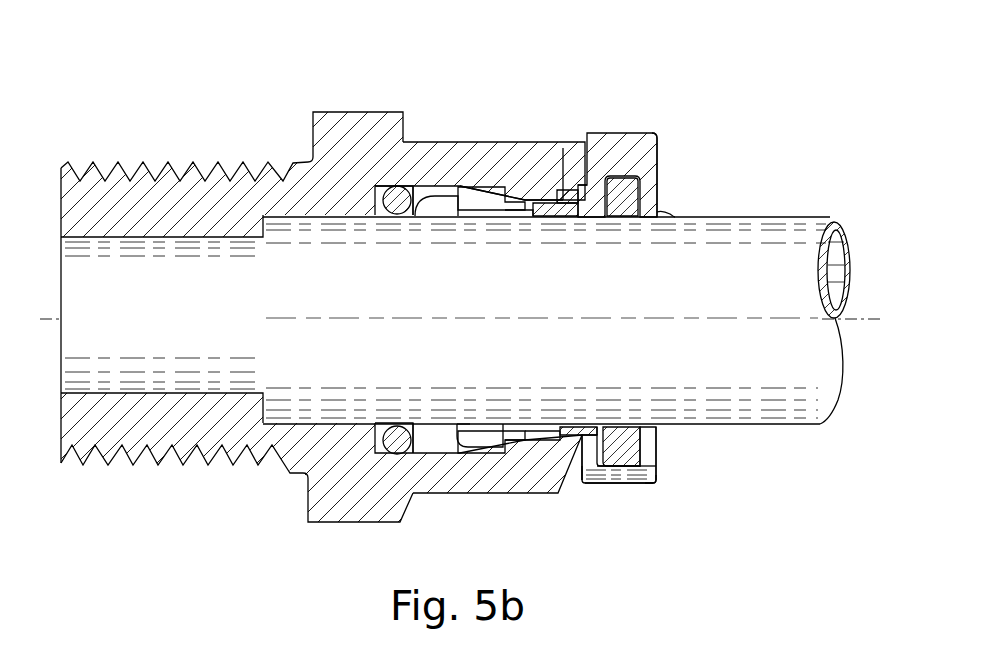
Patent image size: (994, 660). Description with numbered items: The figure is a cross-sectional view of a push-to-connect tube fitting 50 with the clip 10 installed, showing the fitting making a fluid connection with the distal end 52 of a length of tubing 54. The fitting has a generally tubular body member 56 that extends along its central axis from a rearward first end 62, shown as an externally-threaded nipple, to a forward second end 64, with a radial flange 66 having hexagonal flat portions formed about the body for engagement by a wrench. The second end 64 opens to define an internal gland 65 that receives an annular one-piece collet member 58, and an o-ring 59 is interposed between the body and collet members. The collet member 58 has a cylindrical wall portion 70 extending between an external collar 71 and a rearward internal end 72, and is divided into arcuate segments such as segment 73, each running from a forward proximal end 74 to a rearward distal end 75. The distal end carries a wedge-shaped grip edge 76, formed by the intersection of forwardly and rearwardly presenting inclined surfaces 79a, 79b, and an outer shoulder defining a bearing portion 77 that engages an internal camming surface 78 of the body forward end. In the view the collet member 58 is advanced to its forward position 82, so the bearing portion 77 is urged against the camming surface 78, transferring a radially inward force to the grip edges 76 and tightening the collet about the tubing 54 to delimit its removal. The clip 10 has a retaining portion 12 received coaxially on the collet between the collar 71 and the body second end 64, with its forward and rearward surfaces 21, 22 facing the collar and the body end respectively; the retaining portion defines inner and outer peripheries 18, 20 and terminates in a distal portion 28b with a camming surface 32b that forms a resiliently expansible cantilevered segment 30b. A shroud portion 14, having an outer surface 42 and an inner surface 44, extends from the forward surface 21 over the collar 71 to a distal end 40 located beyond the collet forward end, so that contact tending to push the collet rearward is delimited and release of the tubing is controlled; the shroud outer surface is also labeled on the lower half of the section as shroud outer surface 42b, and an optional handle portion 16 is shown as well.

The clip 10 is at (686, 74).
The retaining portion 12 is at (566, 203).
The shroud portion 14 is at (658, 207).
The handle portion 16 is at (643, 132).
The inner periphery 18 is at (592, 437).
The outer periphery 20 is at (593, 486).
The forward surface 21 is at (633, 440).
The rearward surface 22 is at (564, 425).
The second distal portion 28b is at (660, 484).
The cantilevered segment 30b is at (657, 436).
The camming surface 32b is at (581, 484).
The distal end 40 is at (680, 217).
The outer surface 42 is at (659, 143).
The seal ring 42b is at (629, 485).
The inner surface 44 is at (658, 183).
The push-to-connect tube fitting 50 is at (466, 60).
The distal end 52 is at (262, 289).
The tubing 54 is at (840, 223).
The body member 56 is at (483, 142).
The collet member 58 is at (654, 471).
The o-ring 59 is at (383, 184).
The rearward first end 62 is at (62, 160).
The forward second end 64 is at (582, 190).
The internal gland 65 is at (413, 183).
The radial flange 66 is at (328, 112).
The wall portion 70 is at (558, 206).
The collar 71 is at (645, 485).
The rearward internal end 72 is at (441, 200).
The arcuate segment 73 is at (520, 197).
The forward proximal end 74 is at (528, 210).
The rearward distal end 75 is at (413, 197).
The grip edge 76 is at (477, 425).
The bearing portion 77 is at (503, 447).
The internal camming surface 78 is at (463, 195).
The forwardly presenting inclined surface 79a is at (497, 425).
The rearwardly presenting inclined surface 79b is at (465, 425).
The forward position 82 is at (683, 185).